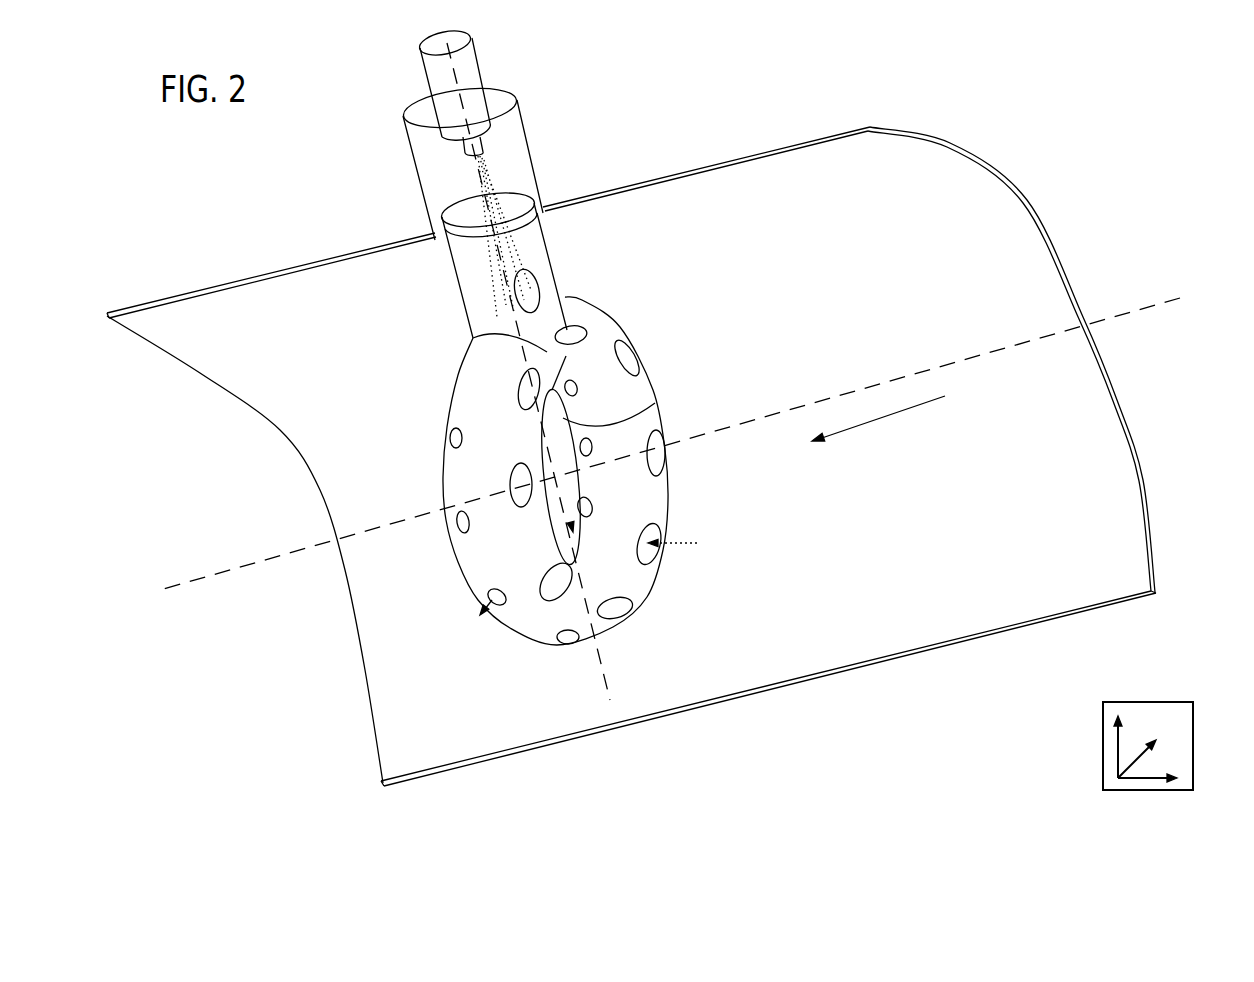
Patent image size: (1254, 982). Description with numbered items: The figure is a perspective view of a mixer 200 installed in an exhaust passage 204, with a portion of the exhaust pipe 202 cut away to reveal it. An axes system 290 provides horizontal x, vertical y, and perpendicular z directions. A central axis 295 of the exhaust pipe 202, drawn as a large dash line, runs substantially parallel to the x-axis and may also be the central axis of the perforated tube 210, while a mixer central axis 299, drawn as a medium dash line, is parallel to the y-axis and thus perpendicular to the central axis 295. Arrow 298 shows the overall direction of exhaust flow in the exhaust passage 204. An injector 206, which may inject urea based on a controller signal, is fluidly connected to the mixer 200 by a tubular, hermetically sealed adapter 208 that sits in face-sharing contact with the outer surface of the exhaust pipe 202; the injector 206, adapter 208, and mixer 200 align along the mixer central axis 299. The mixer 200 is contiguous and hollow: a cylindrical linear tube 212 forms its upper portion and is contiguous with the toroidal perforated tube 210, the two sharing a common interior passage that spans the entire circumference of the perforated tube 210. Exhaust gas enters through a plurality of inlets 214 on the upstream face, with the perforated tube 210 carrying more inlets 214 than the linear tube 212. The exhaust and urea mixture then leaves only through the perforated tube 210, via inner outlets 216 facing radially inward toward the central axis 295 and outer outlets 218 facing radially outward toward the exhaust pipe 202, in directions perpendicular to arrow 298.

The mixer 200 is at (646, 124).
The exhaust pipe 202 is at (1025, 204).
The exhaust passage 204 is at (819, 366).
The injector 206 is at (482, 77).
The adapter 208 is at (418, 178).
The perforated tube 210 is at (612, 576).
The linear tube 212 is at (493, 288).
The inlets 214 is at (655, 343).
The inner outlets 216 is at (596, 432).
The outer outlets 218 is at (446, 416).
The axes system 290 is at (1160, 702).
The central axis 295 is at (1188, 293).
The arrow 298 is at (888, 418).
The mixer central axis 299 is at (609, 692).